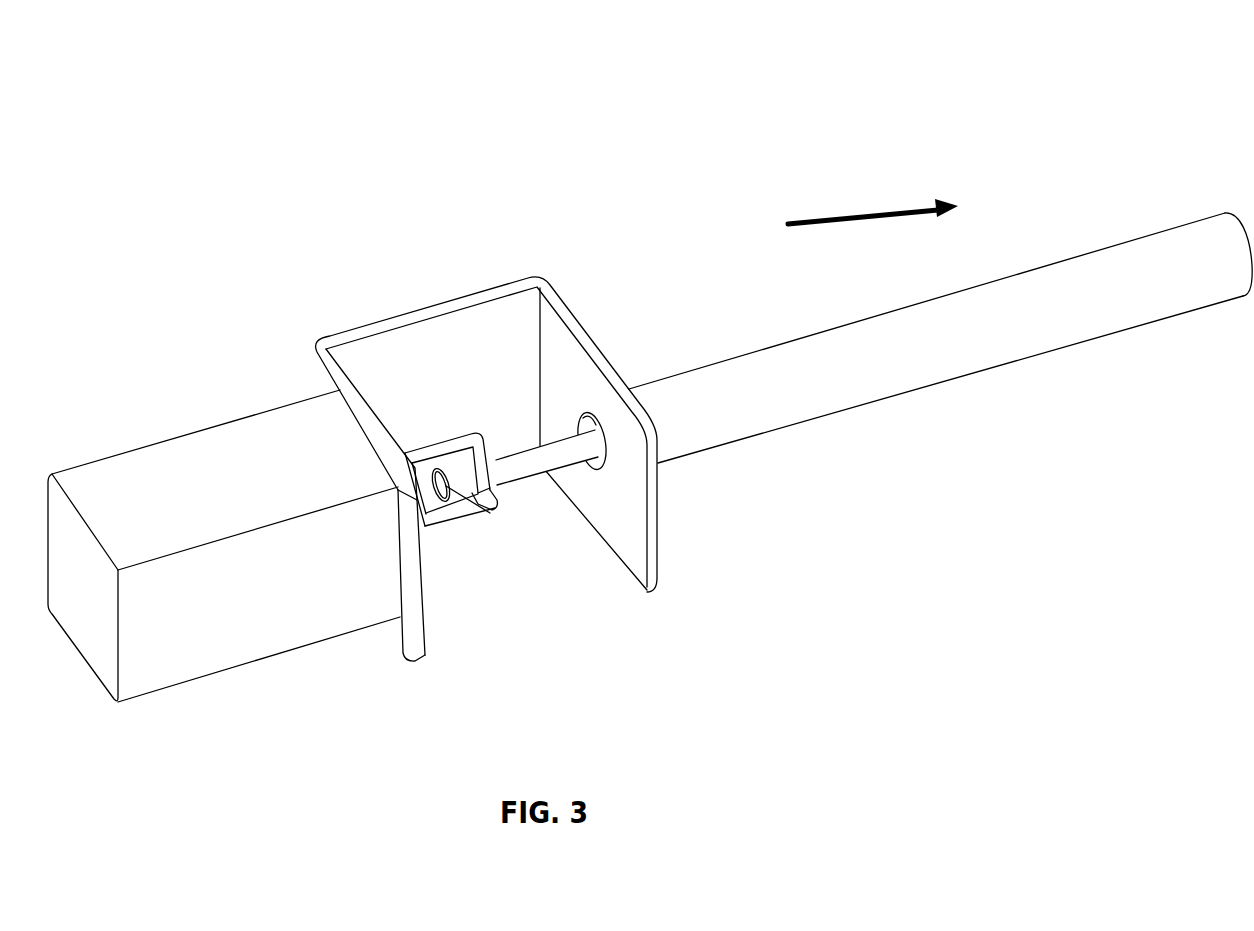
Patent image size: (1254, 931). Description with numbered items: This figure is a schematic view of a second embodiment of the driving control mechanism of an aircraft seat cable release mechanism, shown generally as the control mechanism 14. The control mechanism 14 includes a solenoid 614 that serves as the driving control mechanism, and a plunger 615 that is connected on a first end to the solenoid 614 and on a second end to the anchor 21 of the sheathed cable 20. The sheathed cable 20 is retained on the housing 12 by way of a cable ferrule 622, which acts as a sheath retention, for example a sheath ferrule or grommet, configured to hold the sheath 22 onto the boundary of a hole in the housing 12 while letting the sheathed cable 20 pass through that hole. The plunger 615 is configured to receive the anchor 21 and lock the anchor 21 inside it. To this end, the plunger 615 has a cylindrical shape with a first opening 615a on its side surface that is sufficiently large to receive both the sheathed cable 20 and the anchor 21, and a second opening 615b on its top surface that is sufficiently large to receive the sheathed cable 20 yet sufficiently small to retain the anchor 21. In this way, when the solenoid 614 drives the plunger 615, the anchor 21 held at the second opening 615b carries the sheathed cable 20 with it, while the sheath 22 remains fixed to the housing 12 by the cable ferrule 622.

The rod connector assembly 14 is at (732, 128).
The solenoid 614 is at (132, 687).
The housing 12 is at (658, 577).
The cable ferrule 622 is at (598, 453).
The sheath 22 is at (882, 390).
The sheathed cable 20 is at (537, 462).
The anchor 21 is at (490, 513).
The plunger 615 is at (455, 538).
The first opening 615a is at (400, 447).
The second opening 615b is at (490, 460).